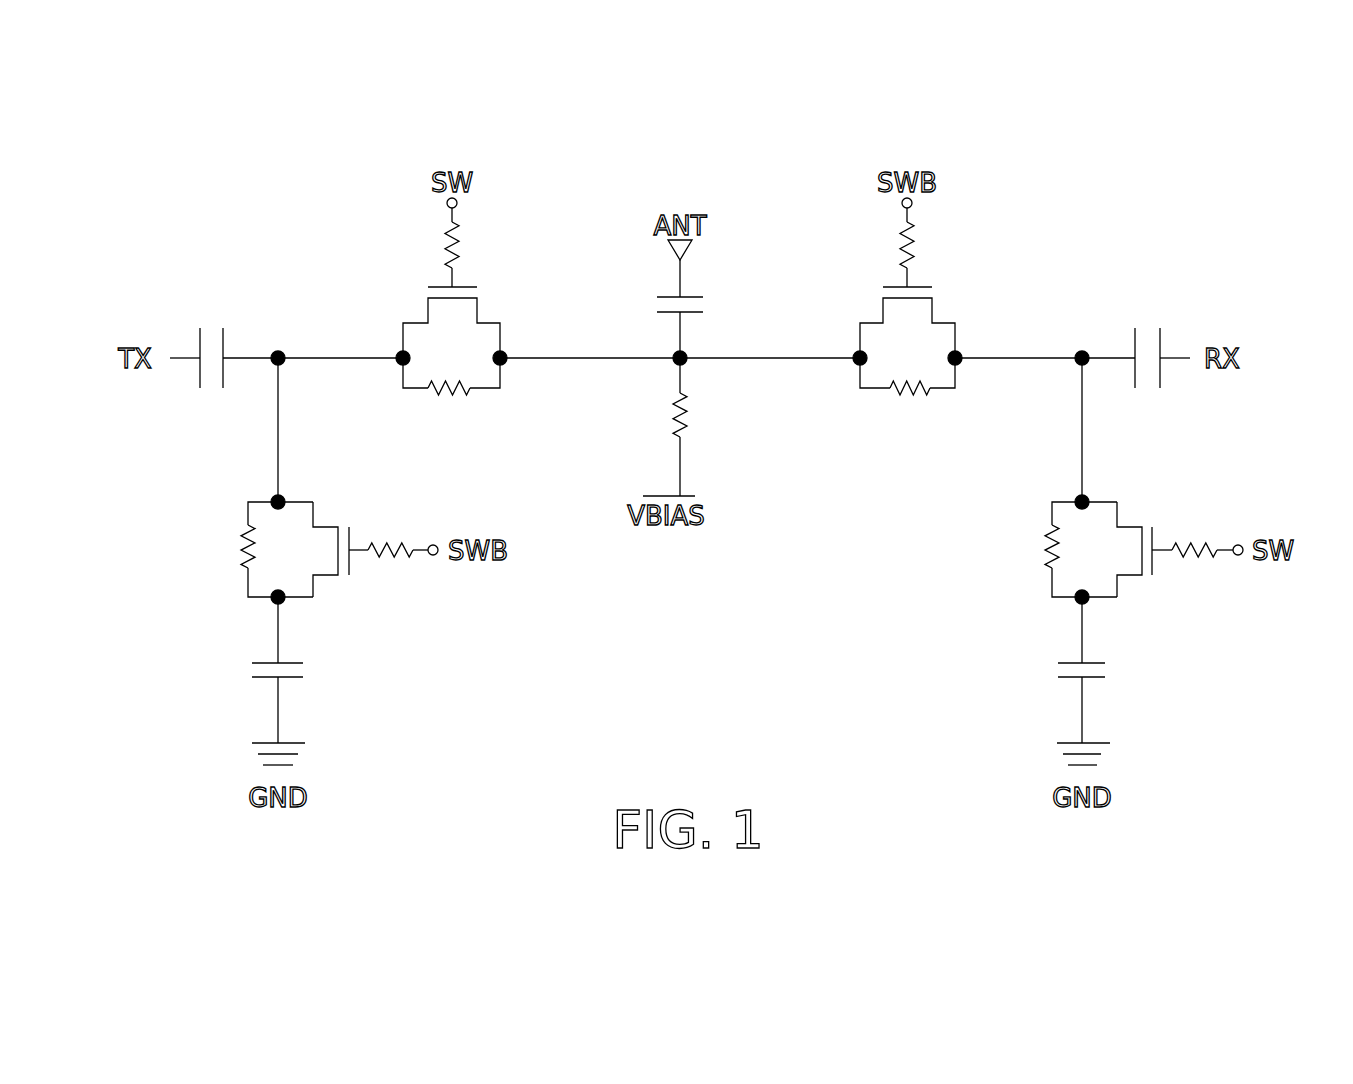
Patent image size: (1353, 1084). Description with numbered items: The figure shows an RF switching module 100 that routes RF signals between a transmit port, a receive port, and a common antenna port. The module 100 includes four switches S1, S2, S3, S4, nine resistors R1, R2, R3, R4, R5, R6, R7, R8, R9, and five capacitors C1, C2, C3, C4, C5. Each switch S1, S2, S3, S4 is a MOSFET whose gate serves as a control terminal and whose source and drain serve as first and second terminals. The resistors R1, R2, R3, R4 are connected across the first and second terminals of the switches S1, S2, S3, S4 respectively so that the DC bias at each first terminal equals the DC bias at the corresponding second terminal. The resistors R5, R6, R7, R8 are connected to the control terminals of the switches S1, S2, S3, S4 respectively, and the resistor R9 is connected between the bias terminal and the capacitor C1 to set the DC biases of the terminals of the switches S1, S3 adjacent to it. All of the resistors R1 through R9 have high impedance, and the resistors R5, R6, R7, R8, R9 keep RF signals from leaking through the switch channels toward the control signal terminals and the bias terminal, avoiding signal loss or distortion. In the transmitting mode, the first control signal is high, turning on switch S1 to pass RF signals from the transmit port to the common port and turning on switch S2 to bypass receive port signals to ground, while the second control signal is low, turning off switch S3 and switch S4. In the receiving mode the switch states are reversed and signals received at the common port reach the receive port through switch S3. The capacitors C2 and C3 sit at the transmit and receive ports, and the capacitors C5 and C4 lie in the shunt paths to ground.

The RF switching module 100 is at (1160, 180).
The capacitor C1 is at (657, 305).
The capacitor C2 is at (212, 335).
The capacitor C3 is at (1148, 335).
The capacitor C4 is at (1056, 670).
The capacitor C5 is at (250, 670).
The resistor R1 is at (454, 398).
The resistor R2 is at (1044, 540).
The resistor R3 is at (907, 398).
The resistor R4 is at (240, 540).
The resistor R5 is at (446, 247).
The resistor R6 is at (1196, 563).
The resistor R7 is at (914, 246).
The resistor R8 is at (391, 563).
The resistor R9 is at (688, 420).
The switch S1 is at (425, 292).
The switch S2 is at (1149, 527).
The switch S3 is at (935, 290).
The switch S4 is at (346, 527).